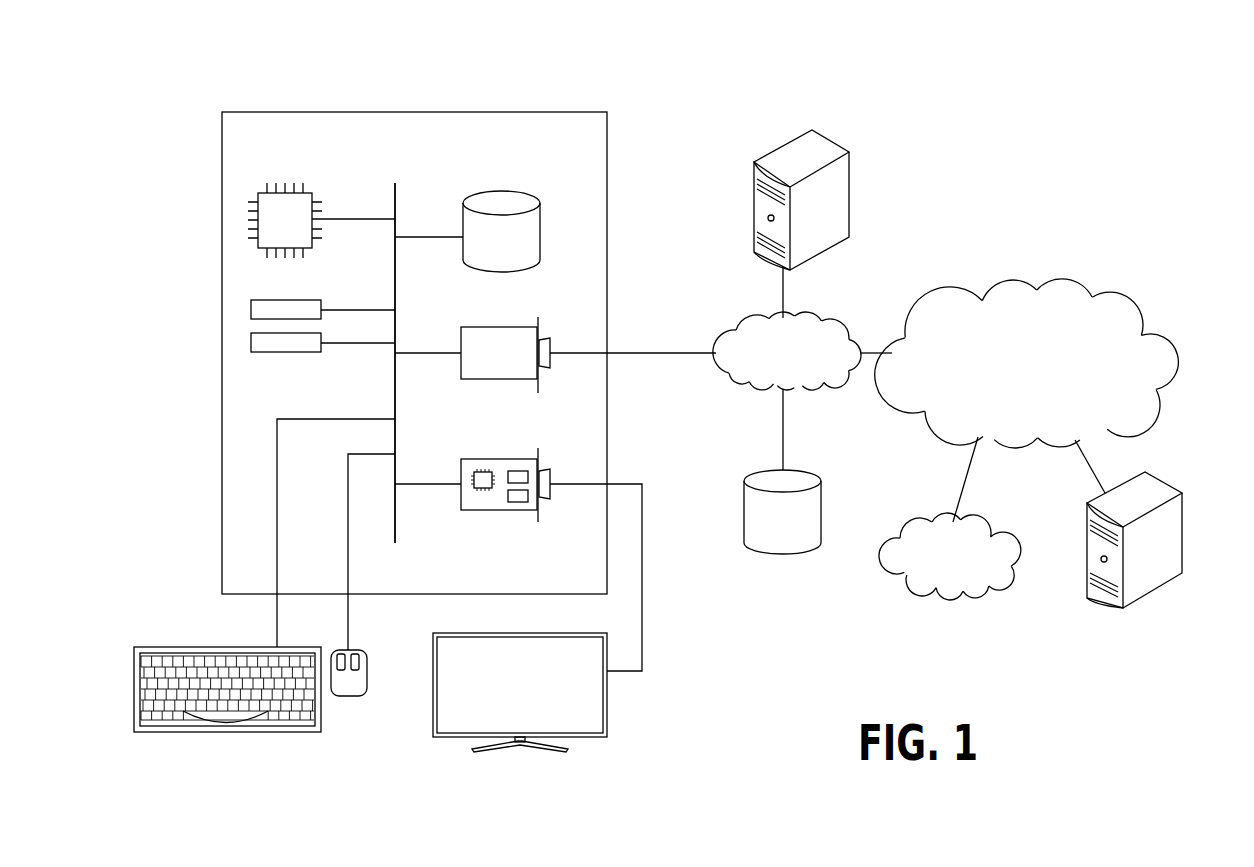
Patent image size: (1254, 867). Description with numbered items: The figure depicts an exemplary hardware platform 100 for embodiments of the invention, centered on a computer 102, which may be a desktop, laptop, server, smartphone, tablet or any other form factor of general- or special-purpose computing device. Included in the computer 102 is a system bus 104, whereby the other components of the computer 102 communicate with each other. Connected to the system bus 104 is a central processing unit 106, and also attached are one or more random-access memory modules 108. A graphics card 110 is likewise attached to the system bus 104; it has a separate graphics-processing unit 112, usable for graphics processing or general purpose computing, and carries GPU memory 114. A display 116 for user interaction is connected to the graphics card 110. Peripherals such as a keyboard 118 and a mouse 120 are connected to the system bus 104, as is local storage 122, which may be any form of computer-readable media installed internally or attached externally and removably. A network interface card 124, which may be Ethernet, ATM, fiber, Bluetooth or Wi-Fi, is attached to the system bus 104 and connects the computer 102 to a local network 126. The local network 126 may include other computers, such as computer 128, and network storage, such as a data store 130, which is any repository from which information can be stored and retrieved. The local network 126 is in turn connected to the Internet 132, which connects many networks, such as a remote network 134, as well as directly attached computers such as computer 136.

The hardware platform 100 is at (259, 84).
The computer 102 is at (565, 112).
The system bus 104 is at (397, 194).
The central processing unit (CPU) 106 is at (307, 193).
The random-access memory (RAM) modules 108 is at (323, 342).
The graphics card 110 is at (461, 470).
The graphics-processing unit (GPU) 112 is at (482, 492).
The GPU memory 114 is at (515, 502).
The display 116 is at (607, 720).
The keyboard 118 is at (230, 733).
The mouse 120 is at (349, 698).
The local storage 122 is at (540, 222).
The network interface card (NIC) 124 is at (461, 339).
The local network 126 is at (834, 313).
The computer 128 is at (838, 140).
The data store 130 is at (811, 471).
The Internet 132 is at (1075, 281).
The remote network 134 is at (1005, 514).
The computer 136 is at (1160, 474).